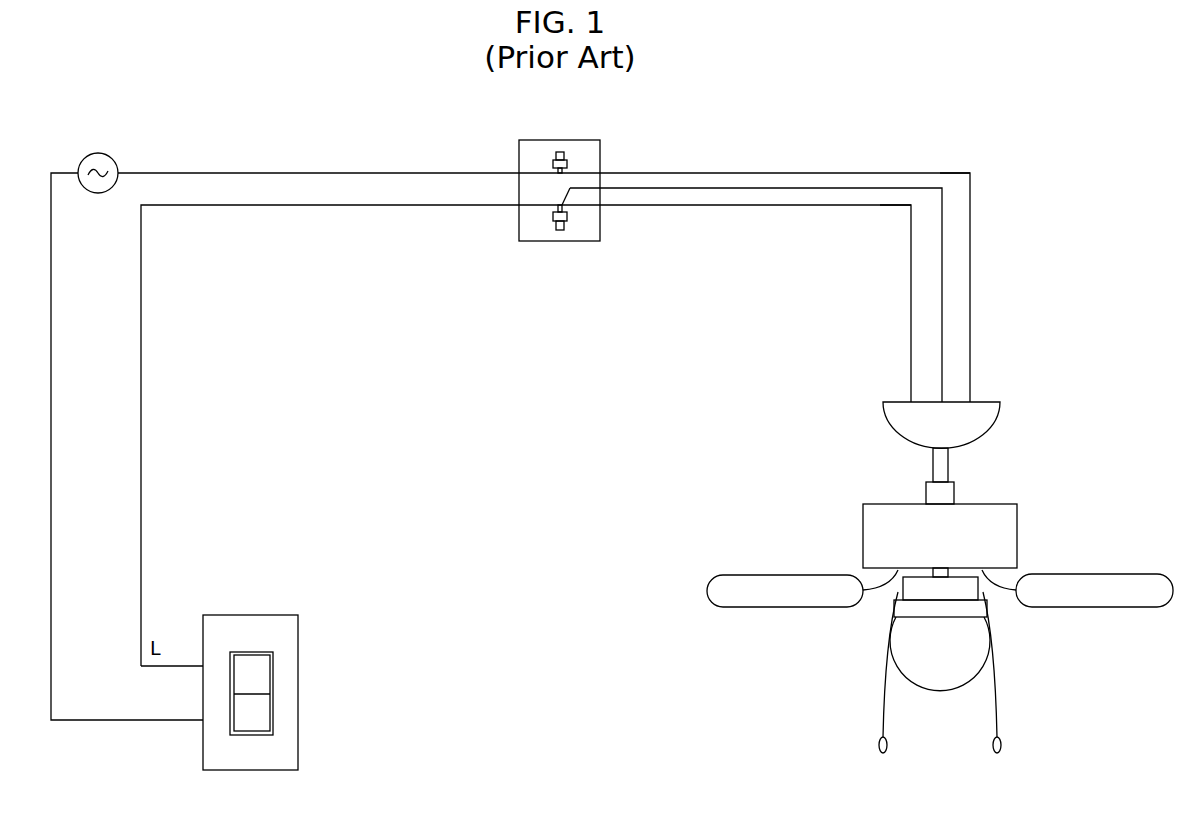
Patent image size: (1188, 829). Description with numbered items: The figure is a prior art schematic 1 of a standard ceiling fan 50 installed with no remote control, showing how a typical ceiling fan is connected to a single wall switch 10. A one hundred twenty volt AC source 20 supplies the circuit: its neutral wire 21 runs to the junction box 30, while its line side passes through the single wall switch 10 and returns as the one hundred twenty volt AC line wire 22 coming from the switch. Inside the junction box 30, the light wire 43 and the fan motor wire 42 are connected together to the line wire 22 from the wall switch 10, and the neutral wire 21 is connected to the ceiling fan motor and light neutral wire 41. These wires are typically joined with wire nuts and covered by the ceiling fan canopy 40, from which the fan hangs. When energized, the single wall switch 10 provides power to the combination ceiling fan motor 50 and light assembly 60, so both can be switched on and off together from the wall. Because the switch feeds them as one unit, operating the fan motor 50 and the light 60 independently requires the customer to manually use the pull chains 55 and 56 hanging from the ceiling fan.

The prior art schematic 1 is at (1003, 92).
The single wall switch 10 is at (277, 700).
The 120VAC power source 20 is at (138, 115).
The 120 VAC neutral wire 21 is at (282, 172).
The 120 VAC line wire 22 is at (283, 207).
The junction box 30 is at (542, 235).
The ceiling fan canopy 40 is at (896, 431).
The ceiling fan motor and light neutral wire 41 is at (972, 212).
The fan motor wire 42 is at (870, 185).
The light wire 43 is at (893, 204).
The ceiling fan 50 is at (888, 535).
The pull chain 55 is at (878, 752).
The pull chain 56 is at (1003, 753).
The light 60 is at (922, 648).